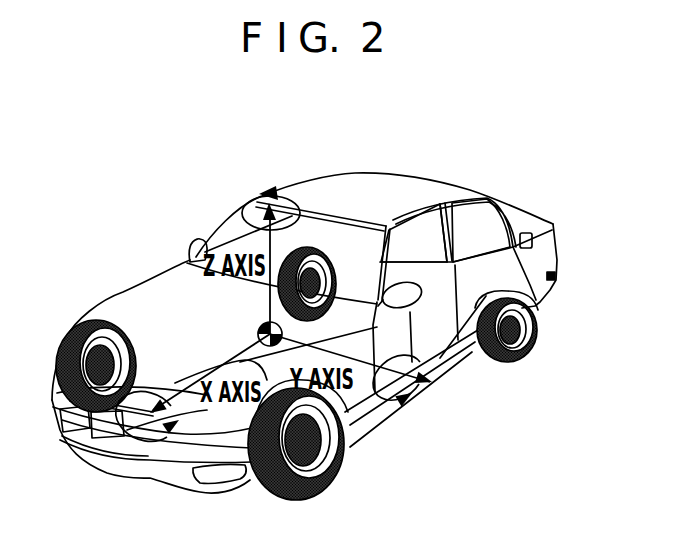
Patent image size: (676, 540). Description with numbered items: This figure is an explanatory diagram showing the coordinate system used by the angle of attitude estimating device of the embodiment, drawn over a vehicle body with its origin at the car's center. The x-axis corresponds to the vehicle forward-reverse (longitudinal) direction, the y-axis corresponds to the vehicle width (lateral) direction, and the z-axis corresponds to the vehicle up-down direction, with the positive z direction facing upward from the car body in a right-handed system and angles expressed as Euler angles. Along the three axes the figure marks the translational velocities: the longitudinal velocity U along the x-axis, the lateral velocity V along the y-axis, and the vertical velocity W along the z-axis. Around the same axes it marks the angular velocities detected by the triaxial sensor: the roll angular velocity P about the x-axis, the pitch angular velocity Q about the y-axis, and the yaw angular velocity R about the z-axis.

The yaw angular velocity R is at (262, 207).
The vertical velocity W is at (283, 236).
The longitudinal velocity U is at (154, 401).
The roll angular velocity P is at (148, 432).
The lateral velocity V is at (396, 367).
The pitch angular velocity Q is at (413, 403).